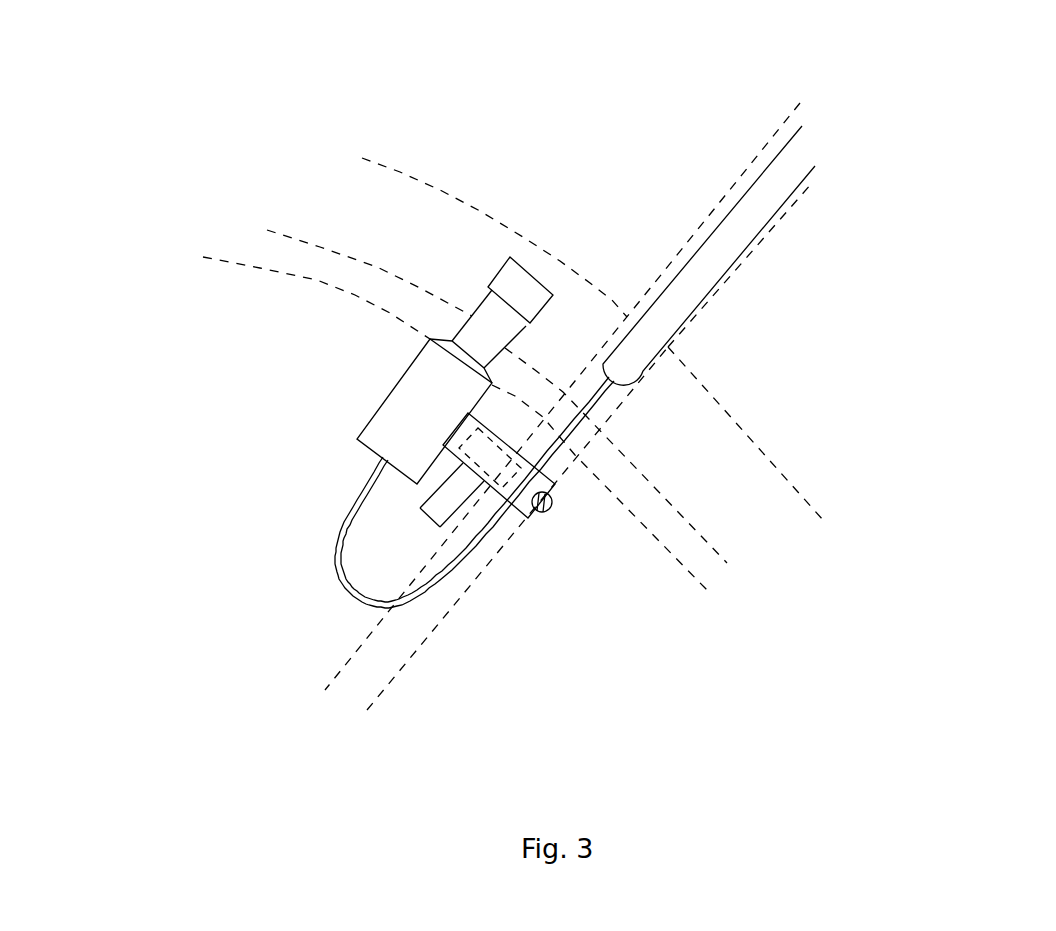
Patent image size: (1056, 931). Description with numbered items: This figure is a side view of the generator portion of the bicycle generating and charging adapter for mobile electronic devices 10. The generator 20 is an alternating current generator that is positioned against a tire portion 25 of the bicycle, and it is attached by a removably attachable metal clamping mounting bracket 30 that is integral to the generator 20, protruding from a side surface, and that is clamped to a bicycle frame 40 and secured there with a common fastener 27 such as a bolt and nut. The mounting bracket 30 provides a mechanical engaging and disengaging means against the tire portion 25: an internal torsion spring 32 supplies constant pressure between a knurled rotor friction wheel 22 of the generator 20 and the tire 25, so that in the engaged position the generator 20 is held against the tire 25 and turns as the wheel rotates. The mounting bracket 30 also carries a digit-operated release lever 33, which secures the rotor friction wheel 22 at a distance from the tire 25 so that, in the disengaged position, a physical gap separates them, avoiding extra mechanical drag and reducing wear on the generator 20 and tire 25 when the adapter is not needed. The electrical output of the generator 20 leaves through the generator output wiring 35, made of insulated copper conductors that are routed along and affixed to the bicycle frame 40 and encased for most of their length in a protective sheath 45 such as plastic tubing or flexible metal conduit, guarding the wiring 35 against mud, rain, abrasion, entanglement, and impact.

The bicycle generating and charging adapter 10 is at (993, 180).
The generator 20 is at (408, 402).
The rotor friction wheel 22 is at (522, 278).
The tire portion 25 is at (382, 178).
The fastener 27 is at (552, 512).
The mounting bracket 30 is at (508, 447).
The torsion spring 32 is at (497, 467).
The release lever 33 is at (428, 513).
The generator output wiring 35 is at (345, 520).
The bicycle frame 40 is at (430, 630).
The protective sheath 45 is at (782, 185).